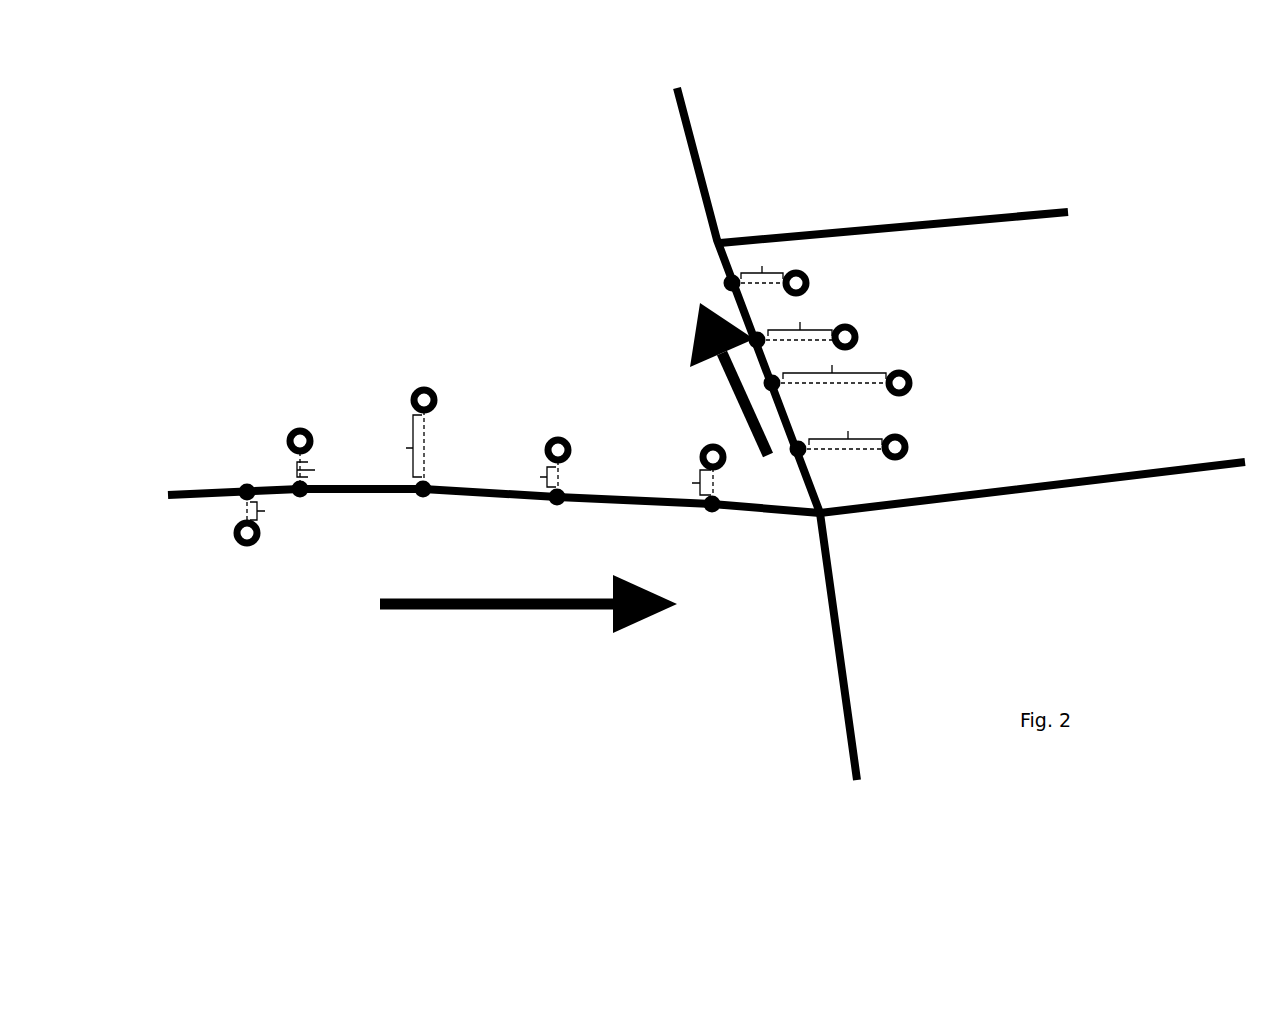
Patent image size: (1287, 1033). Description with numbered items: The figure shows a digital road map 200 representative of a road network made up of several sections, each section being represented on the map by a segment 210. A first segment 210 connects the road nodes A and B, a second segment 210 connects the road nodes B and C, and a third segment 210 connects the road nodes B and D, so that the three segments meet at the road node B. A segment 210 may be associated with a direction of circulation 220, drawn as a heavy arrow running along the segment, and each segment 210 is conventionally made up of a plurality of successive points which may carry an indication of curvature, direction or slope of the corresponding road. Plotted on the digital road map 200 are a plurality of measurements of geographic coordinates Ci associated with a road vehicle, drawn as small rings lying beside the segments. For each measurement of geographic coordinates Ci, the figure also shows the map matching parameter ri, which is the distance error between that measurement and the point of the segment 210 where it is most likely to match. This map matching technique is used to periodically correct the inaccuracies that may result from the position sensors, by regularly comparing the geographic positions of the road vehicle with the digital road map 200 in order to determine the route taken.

The digital road map 200 is at (342, 208).
The segment 210 is at (212, 491).
The direction of circulation 220 is at (700, 337).
The geographic coordinates Ci is at (298, 427).
The map matching parameter ri is at (849, 429).
The road node A is at (172, 516).
The road node B is at (803, 522).
The road node C is at (1233, 482).
The road node D is at (692, 237).